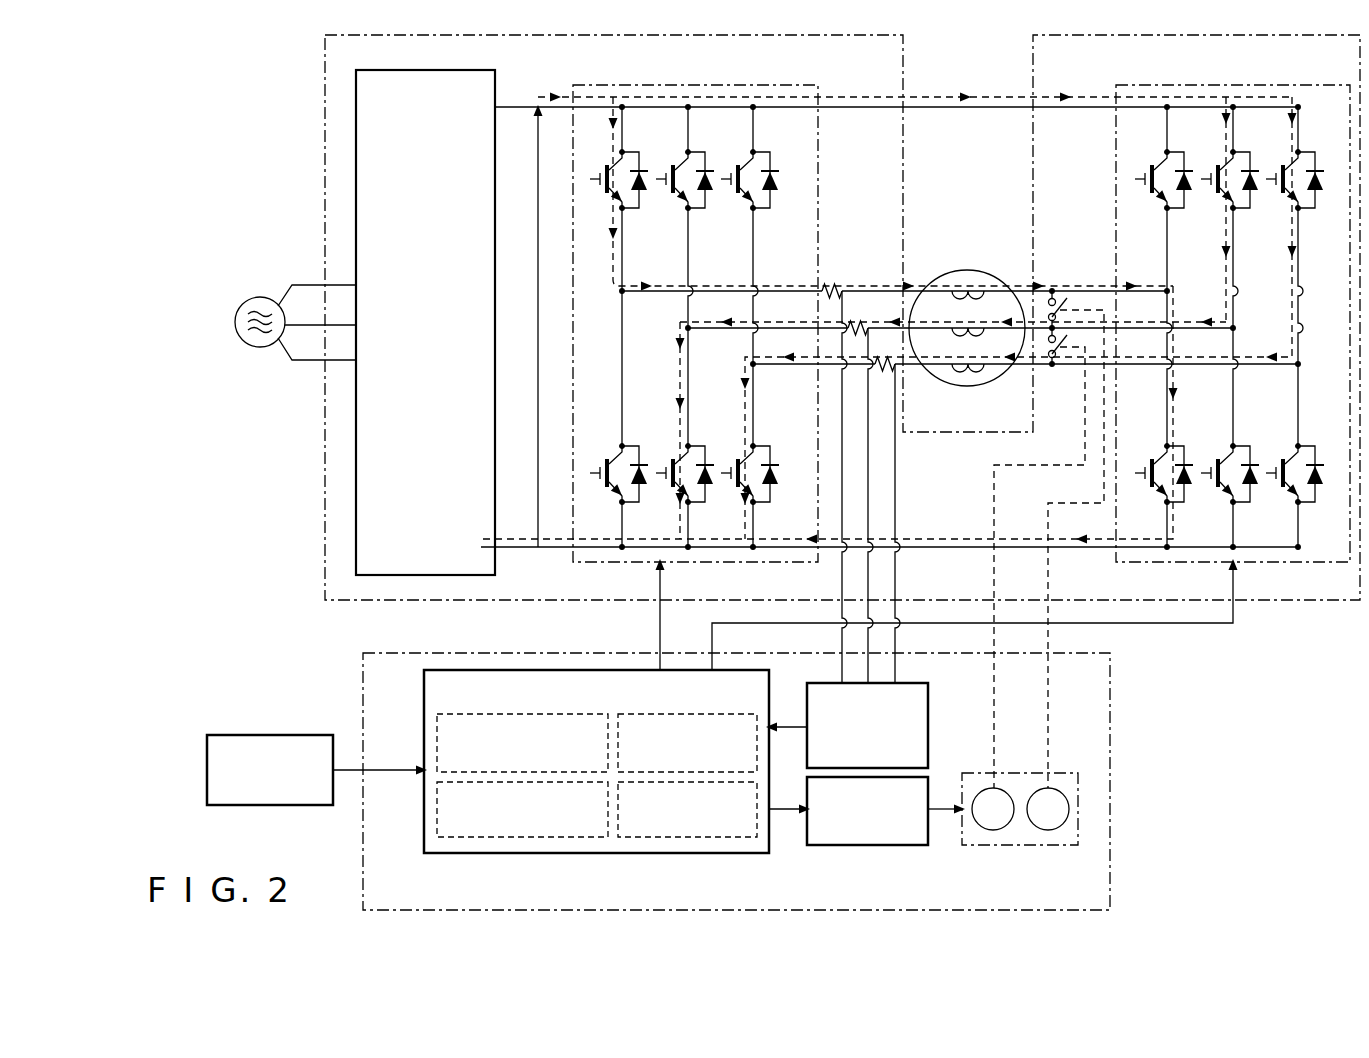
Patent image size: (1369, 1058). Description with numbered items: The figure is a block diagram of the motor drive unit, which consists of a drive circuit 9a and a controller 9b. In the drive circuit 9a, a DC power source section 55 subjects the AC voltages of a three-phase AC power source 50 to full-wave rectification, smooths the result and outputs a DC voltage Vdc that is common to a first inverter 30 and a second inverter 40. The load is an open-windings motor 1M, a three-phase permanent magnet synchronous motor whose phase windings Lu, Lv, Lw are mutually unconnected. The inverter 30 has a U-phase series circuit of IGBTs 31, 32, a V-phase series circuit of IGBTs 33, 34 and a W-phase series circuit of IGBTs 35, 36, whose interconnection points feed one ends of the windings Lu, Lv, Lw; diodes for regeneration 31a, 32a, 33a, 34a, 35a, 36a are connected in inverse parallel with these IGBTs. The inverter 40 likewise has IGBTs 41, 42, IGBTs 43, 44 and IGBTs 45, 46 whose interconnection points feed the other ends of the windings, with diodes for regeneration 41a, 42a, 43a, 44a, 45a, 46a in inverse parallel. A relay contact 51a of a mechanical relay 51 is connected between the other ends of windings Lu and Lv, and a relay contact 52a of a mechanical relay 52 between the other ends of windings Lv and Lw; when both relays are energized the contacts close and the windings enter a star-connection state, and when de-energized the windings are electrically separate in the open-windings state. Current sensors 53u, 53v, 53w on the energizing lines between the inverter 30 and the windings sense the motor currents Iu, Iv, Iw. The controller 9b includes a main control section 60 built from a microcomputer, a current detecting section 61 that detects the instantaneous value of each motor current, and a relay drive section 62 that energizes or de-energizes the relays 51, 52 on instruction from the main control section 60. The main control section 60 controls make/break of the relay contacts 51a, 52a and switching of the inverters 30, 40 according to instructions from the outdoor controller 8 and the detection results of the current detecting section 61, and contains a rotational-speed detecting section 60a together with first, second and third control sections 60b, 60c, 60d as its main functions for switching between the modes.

The outdoor controller 8 is at (268, 735).
The drive circuit 9a is at (903, 68).
The controller 9b is at (1110, 766).
The motor 1M is at (965, 323).
The phase winding Lu is at (958, 288).
The phase winding Lv is at (958, 325).
The phase winding Lw is at (962, 370).
The inverter 30 is at (720, 85).
The IGBT 31 is at (607, 165).
The IGBT 32 is at (607, 459).
The IGBT 33 is at (673, 165).
The IGBT 34 is at (673, 459).
The IGBT 35 is at (738, 165).
The IGBT 36 is at (738, 459).
The diode for regeneration 31a is at (645, 194).
The diode for regeneration 32a is at (645, 488).
The diode for regeneration 33a is at (711, 194).
The diode for regeneration 34a is at (711, 488).
The diode for regeneration 35a is at (776, 194).
The diode for regeneration 36a is at (776, 488).
The inverter 40 is at (1222, 85).
The IGBT 41 is at (1152, 165).
The IGBT 42 is at (1152, 459).
The IGBT 43 is at (1218, 165).
The IGBT 44 is at (1218, 459).
The IGBT 45 is at (1283, 165).
The IGBT 46 is at (1283, 459).
The diode for regeneration 41a is at (1190, 194).
The diode for regeneration 42a is at (1190, 488).
The diode for regeneration 43a is at (1256, 194).
The diode for regeneration 44a is at (1256, 488).
The diode for regeneration 45a is at (1321, 194).
The diode for regeneration 46a is at (1321, 488).
The three-phase AC power source 50 is at (270, 298).
The mechanical relay 51 is at (1060, 788).
The mechanical relay 52 is at (1004, 788).
The relay contact 51a is at (1062, 306).
The relay contact 52a is at (1060, 358).
The current sensor 53u is at (833, 287).
The current sensor 53v is at (860, 322).
The current sensor 53w is at (888, 370).
The DC power source section 55 is at (497, 78).
The main control section 60 is at (596, 756).
The rotational-speed detecting section 60a is at (445, 712).
The first control section 60b is at (740, 712).
The second control section 60c is at (538, 840).
The third control section 60d is at (690, 840).
The current detecting section 61 is at (928, 715).
The relay drive section 62 is at (930, 793).
The motor current Iu is at (784, 288).
The motor current Iv is at (784, 325).
The motor current Iw is at (784, 362).
The DC voltage Vdc is at (539, 326).